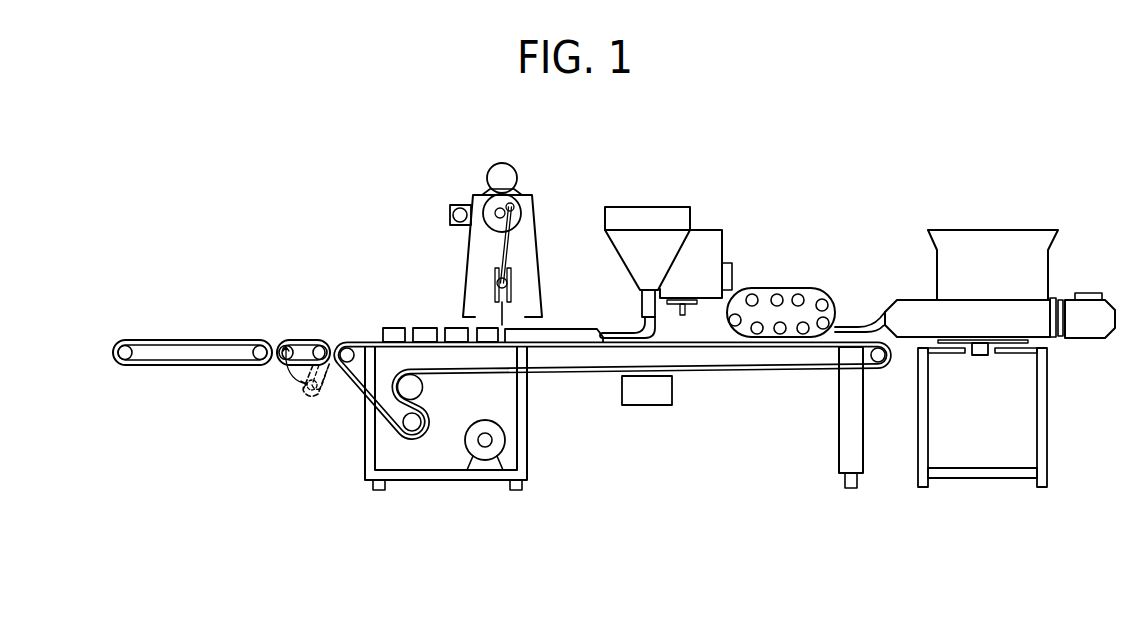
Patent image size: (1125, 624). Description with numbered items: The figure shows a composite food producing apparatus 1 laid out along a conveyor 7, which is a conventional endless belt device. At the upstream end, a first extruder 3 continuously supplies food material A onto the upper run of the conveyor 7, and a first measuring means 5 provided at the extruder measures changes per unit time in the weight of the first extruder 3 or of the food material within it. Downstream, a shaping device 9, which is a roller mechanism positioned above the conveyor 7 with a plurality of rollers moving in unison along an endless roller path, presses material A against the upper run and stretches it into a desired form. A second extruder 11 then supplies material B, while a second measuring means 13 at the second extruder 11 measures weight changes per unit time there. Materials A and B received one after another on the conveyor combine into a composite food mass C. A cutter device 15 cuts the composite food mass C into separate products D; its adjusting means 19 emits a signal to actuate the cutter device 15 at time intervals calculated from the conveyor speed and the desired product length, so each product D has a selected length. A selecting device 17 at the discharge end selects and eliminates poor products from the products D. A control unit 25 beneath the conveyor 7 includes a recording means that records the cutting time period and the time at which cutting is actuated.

The composite food producing apparatus 1 is at (912, 147).
The first extruder 3 is at (987, 240).
The first measuring means 5 is at (982, 358).
The conveyor 7 is at (455, 375).
The shaping device 9 is at (782, 288).
The second extruder 11 is at (685, 217).
The second measuring means 13 is at (685, 308).
The cutter device 15 is at (532, 206).
The selecting device 17 is at (302, 340).
The adjusting means 19 is at (456, 205).
The control unit 25 is at (650, 398).
The food material A is at (875, 315).
The food material B is at (638, 328).
The composite food mass C is at (578, 332).
The products D is at (394, 328).